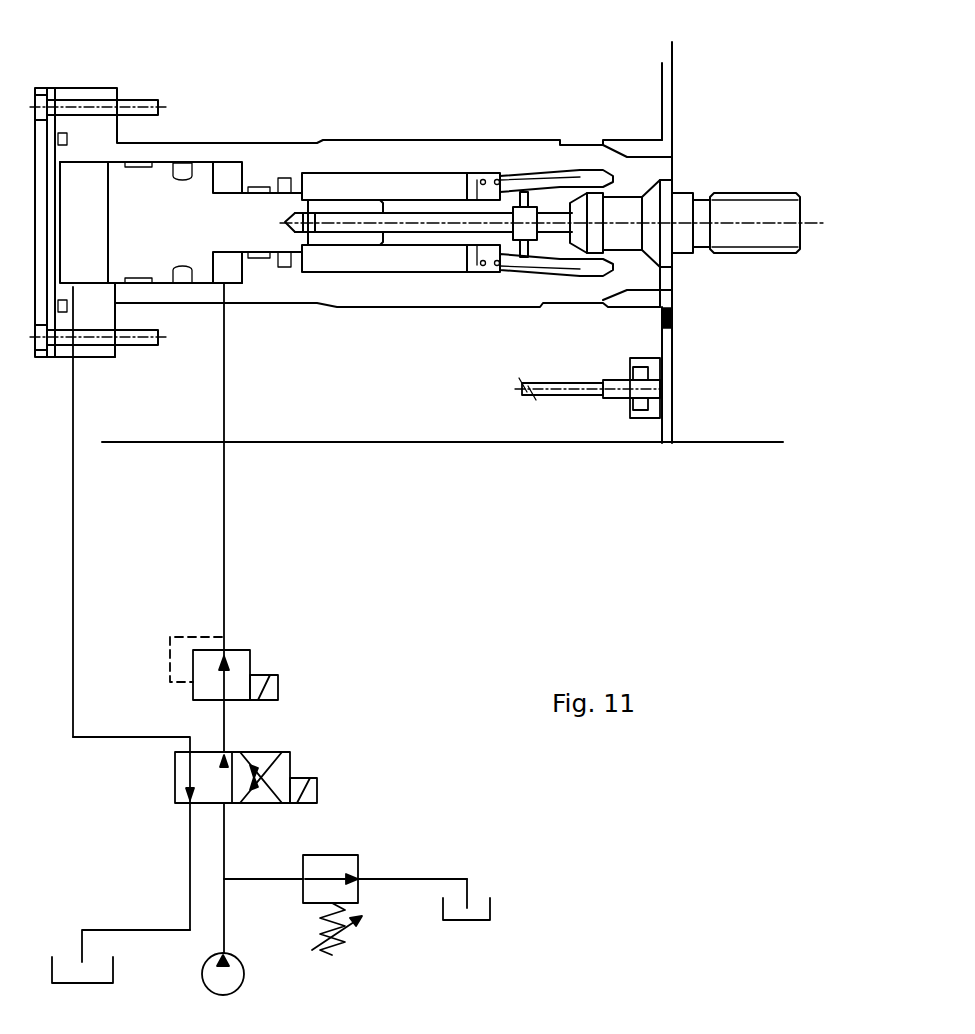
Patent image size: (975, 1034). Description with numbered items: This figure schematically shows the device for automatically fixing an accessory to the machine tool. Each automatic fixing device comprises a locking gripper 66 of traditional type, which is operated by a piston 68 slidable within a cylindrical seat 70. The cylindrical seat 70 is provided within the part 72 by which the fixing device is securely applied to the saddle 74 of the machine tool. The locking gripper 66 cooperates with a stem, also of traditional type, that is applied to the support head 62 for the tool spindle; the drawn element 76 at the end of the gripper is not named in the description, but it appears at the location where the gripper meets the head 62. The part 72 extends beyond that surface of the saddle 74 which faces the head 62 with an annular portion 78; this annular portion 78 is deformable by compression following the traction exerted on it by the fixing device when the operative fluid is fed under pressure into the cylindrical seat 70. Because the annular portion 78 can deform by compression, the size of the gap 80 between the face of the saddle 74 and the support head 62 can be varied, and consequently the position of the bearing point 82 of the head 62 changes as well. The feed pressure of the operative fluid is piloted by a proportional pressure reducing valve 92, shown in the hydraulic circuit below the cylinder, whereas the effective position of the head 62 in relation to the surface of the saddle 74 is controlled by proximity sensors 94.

The support head 62 is at (732, 397).
The locking gripper 66 is at (497, 182).
The piston 68 is at (135, 195).
The cylindrical seat 70 is at (227, 177).
The part 72 is at (93, 316).
The saddle 74 is at (451, 381).
The clamping head 76 is at (624, 213).
The annular portion 78 is at (390, 158).
The gap 80 is at (665, 325).
The bearing point 82 is at (670, 280).
The proportional pressure reducing valve 92 is at (235, 676).
The proximity sensors 94 is at (652, 390).